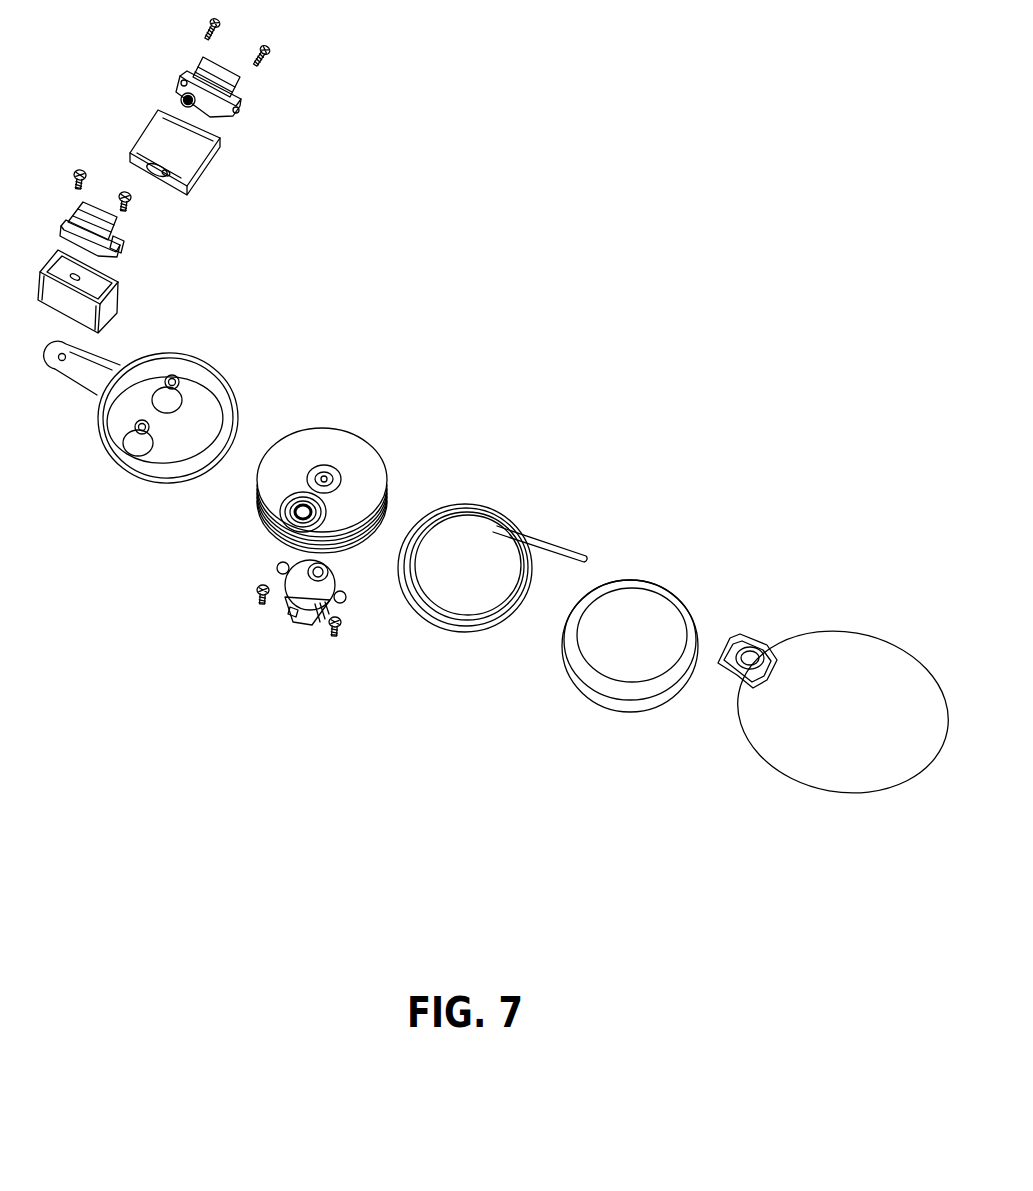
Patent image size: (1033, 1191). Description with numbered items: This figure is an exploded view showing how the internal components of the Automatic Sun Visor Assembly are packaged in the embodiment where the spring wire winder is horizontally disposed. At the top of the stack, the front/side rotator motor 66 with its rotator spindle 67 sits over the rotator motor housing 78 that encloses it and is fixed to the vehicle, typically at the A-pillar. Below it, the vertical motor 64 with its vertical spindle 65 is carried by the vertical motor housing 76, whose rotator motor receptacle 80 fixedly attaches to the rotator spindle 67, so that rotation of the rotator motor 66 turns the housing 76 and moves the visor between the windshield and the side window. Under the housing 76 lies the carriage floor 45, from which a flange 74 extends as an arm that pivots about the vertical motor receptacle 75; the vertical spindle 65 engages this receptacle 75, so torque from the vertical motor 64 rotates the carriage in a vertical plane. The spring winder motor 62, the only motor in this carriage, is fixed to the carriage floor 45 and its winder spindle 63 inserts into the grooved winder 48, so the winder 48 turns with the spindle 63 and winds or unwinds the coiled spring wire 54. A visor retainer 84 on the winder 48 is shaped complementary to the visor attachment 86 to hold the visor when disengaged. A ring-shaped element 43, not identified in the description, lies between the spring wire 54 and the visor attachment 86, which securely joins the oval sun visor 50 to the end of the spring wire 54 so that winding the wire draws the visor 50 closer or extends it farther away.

The sealing ring 43 is at (665, 590).
The carriage floor 45 is at (174, 404).
The winder 48 is at (325, 489).
The sun visor 50 is at (848, 637).
The spring wire 54 is at (478, 505).
The spring winder motor 62 is at (266, 592).
The winder spindle 63 is at (313, 568).
The vertical motor 64 is at (118, 231).
The vertical spindle 65 is at (123, 194).
The front/side rotator motor 66 is at (205, 87).
The rotator spindle 67 is at (181, 100).
The flange 74 is at (90, 357).
The vertical motor receptacle 75 is at (60, 360).
The vertical motor housing 76 is at (128, 291).
The rotator motor housing 78 is at (219, 141).
The rotator motor receptacle 80 is at (80, 277).
The visor retainer 84 is at (283, 508).
The visor attachment 86 is at (740, 672).